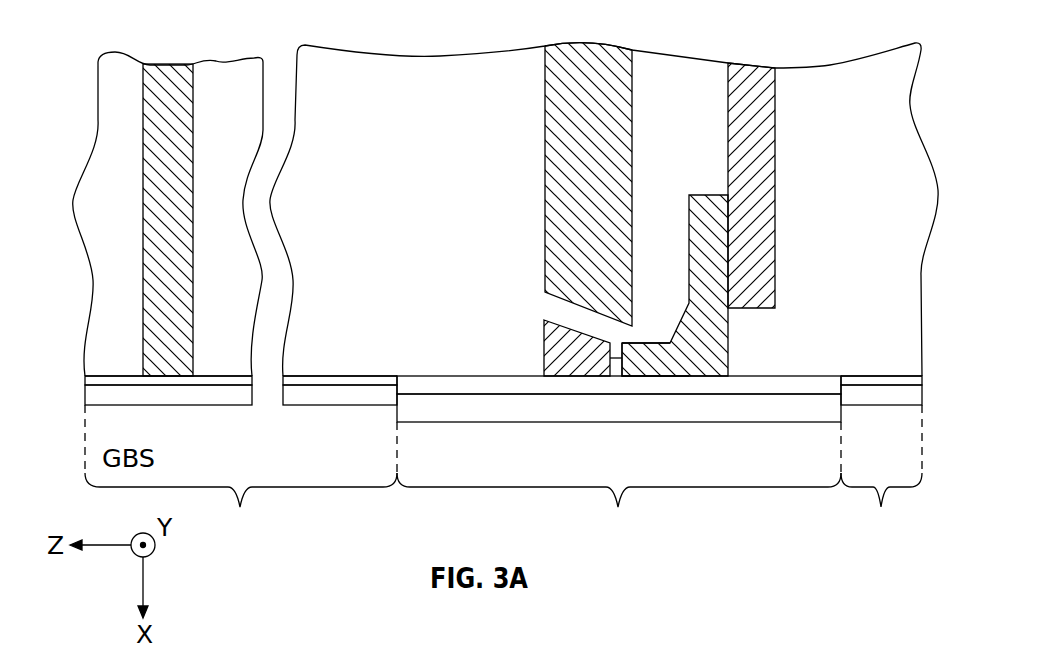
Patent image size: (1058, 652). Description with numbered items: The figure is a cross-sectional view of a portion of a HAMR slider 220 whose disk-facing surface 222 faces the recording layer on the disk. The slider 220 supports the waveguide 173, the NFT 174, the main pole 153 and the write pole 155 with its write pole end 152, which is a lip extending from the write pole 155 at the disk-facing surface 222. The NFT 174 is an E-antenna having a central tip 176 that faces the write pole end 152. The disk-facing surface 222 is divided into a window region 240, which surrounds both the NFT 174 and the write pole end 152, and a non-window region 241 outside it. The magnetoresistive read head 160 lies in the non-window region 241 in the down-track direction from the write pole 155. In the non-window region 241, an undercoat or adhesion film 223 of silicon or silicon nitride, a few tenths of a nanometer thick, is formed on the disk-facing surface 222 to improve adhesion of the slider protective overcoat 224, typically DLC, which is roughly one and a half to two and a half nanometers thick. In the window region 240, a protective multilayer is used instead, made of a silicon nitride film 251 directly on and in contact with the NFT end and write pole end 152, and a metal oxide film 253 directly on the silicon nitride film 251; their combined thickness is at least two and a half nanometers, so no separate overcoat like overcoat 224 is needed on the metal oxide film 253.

The magnetoresistive read head 160 is at (160, 70).
The slider 220 is at (352, 72).
The waveguide 173 is at (555, 130).
The main pole 153 is at (740, 122).
The write pole 155 is at (702, 205).
The write pole end 152 is at (645, 343).
The NFT 174 is at (547, 343).
The central tip 176 is at (612, 358).
The disk-facing surface 222 is at (112, 375).
The adhesion film 223 is at (92, 380).
The protective overcoat 224 is at (92, 397).
The silicon nitride film 251 is at (445, 375).
The metal oxide film 253 is at (432, 410).
The window region 240 is at (619, 480).
The non-window region 241 is at (503, 473).